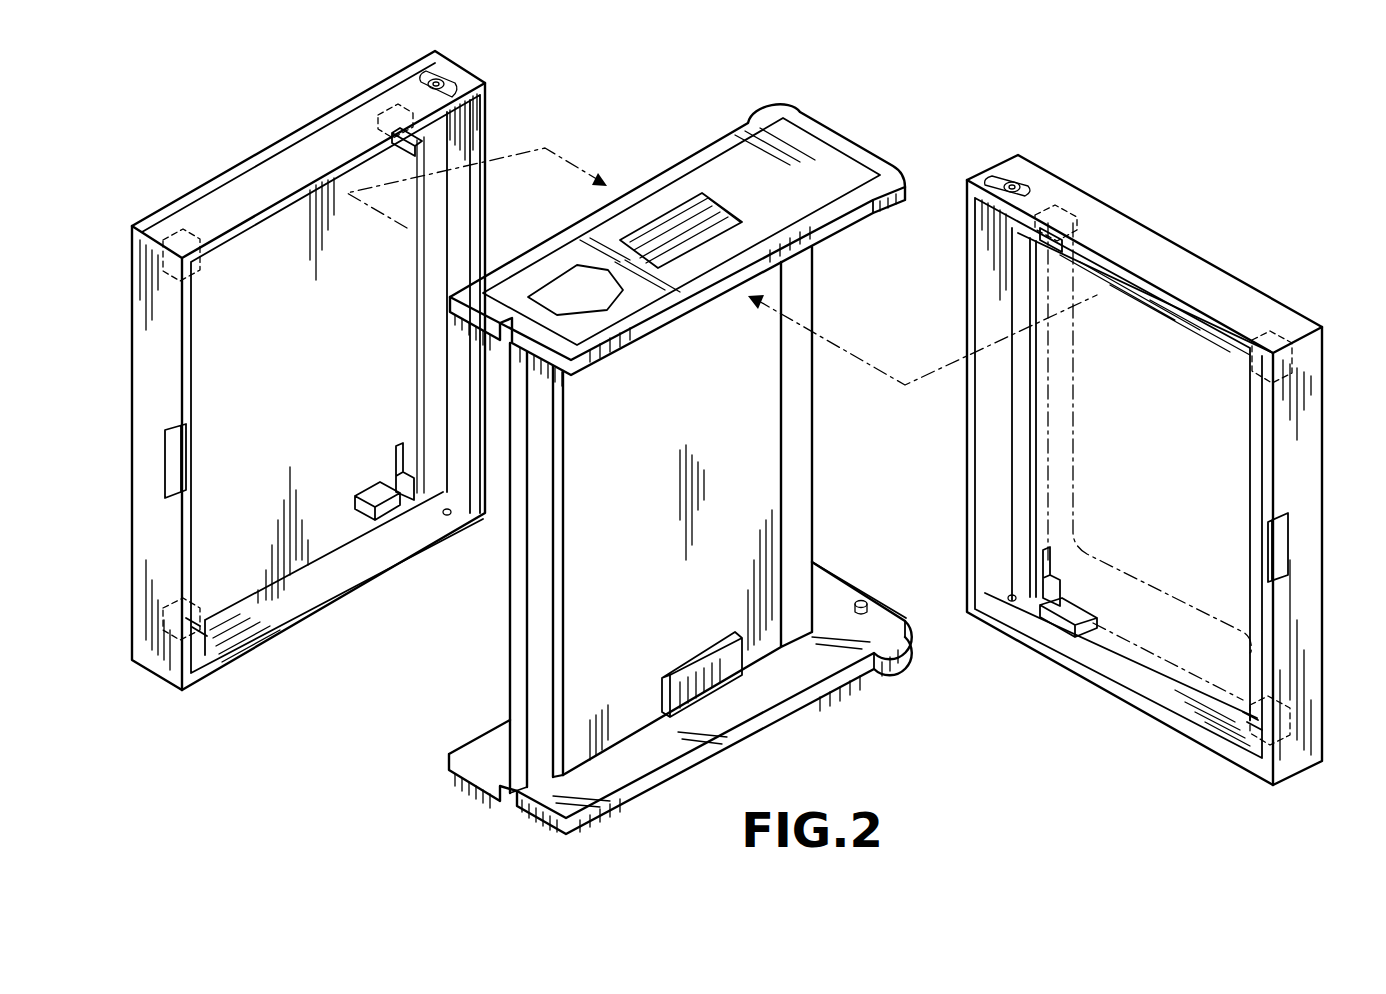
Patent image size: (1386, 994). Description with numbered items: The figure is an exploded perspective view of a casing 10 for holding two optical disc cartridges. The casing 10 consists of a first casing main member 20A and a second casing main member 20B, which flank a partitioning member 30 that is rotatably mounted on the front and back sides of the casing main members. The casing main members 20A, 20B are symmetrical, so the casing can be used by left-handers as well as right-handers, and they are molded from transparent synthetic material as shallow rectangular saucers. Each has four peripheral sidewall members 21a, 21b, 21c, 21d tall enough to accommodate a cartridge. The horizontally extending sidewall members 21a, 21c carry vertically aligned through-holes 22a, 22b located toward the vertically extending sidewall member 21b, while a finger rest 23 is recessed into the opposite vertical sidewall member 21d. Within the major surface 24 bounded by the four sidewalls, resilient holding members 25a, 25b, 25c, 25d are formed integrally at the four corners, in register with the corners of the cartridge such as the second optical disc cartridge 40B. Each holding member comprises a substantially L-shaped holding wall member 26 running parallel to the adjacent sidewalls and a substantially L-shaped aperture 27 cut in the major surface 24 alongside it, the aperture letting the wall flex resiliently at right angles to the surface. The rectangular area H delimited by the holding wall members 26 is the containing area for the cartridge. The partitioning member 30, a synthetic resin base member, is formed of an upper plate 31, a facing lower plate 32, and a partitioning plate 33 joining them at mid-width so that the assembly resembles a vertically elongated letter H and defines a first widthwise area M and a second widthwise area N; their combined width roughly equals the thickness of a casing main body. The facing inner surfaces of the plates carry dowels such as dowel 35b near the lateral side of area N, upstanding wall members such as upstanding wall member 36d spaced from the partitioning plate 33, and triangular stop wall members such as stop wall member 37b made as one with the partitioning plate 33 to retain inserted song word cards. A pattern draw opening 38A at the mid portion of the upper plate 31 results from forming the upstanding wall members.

The casing 10 is at (722, 60).
The first casing main member 20A is at (576, 93).
The second casing main member 20B is at (983, 161).
The partitioning member 30 is at (849, 136).
The peripheral sidewall member 21a is at (346, 118).
The vertically extending sidewall member 21b is at (467, 216).
The peripheral sidewall member 21c is at (298, 601).
The vertically extending sidewall member 21d is at (151, 665).
The through-hole 22a is at (441, 88).
The through-hole 22b is at (450, 518).
The finger rest 23 is at (165, 466).
The major surface 24 is at (212, 295).
The resilient holding member 25a is at (418, 138).
The resilient holding member 25b is at (358, 648).
The resilient holding member 25c is at (209, 630).
The resilient holding member 25d is at (181, 236).
The holding wall member 26 is at (397, 505).
The aperture 27 is at (370, 522).
The upper plate 31 is at (719, 177).
The lower plate 32 is at (792, 672).
The partitioning plate 33 is at (773, 441).
The dowel 35b is at (866, 599).
The upstanding wall member 36d is at (719, 691).
The stop wall member 37b is at (819, 586).
The pattern draw opening 38A is at (660, 238).
The second optical disc cartridge 40B is at (1186, 660).
The rectangular area H is at (286, 258).
The first widthwise area M is at (508, 703).
The second widthwise area N is at (646, 735).